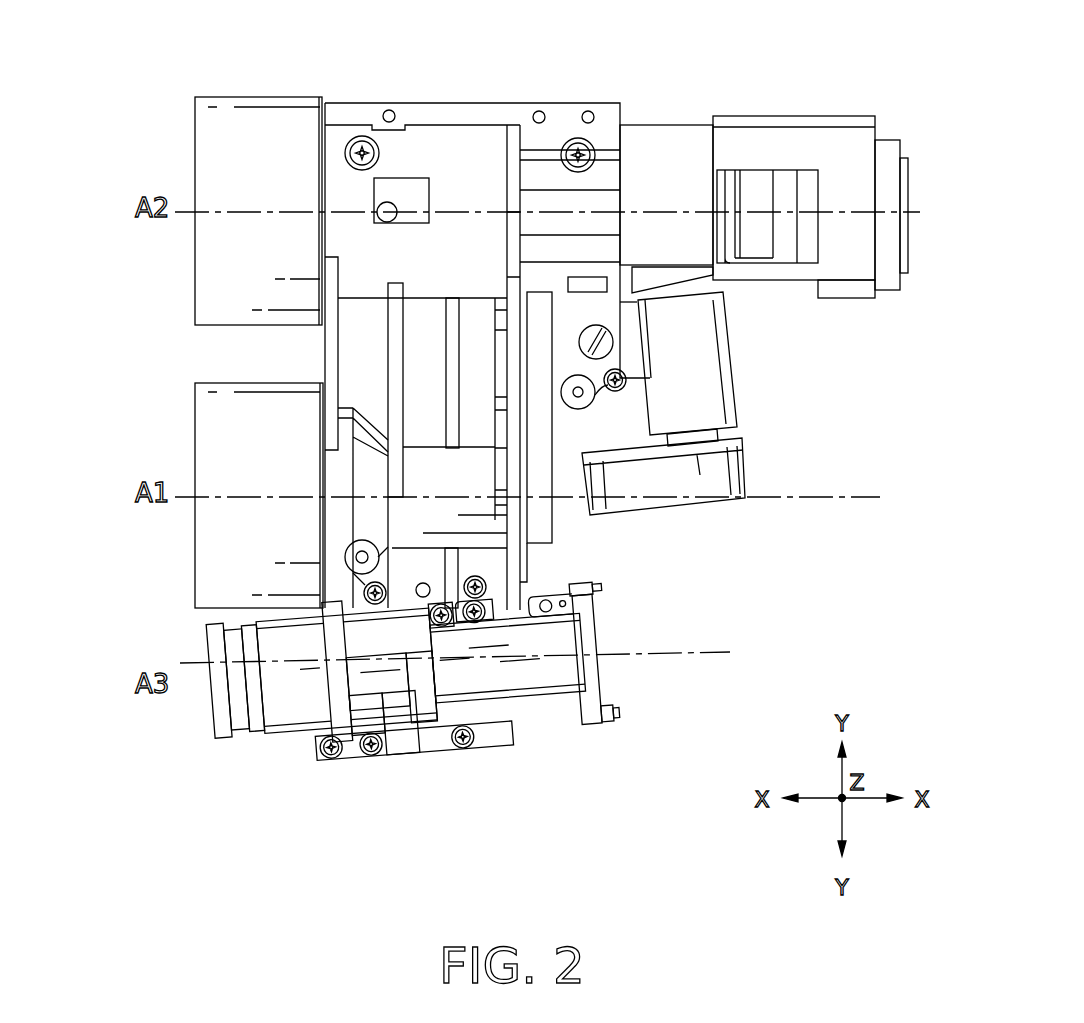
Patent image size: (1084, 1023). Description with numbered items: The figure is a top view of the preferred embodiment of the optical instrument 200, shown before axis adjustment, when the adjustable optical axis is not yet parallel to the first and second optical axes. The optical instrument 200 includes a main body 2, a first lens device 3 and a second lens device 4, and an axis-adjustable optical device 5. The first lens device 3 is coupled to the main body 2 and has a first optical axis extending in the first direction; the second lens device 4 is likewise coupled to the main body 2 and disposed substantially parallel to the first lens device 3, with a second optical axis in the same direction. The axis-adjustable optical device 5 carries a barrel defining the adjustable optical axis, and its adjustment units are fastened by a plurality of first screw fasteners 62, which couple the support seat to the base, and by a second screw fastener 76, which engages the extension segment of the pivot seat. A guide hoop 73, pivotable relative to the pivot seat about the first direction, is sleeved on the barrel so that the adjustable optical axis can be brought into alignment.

The main body 2 is at (473, 300).
The first lens device 3 is at (195, 415).
The second lens device 4 is at (195, 128).
The axis-adjustable optical device 5 is at (438, 757).
The first screw fasteners 62 is at (322, 763).
The guide hoop 73 is at (337, 706).
The second screw fastener 76 is at (368, 760).
The optical instrument 200 is at (762, 107).